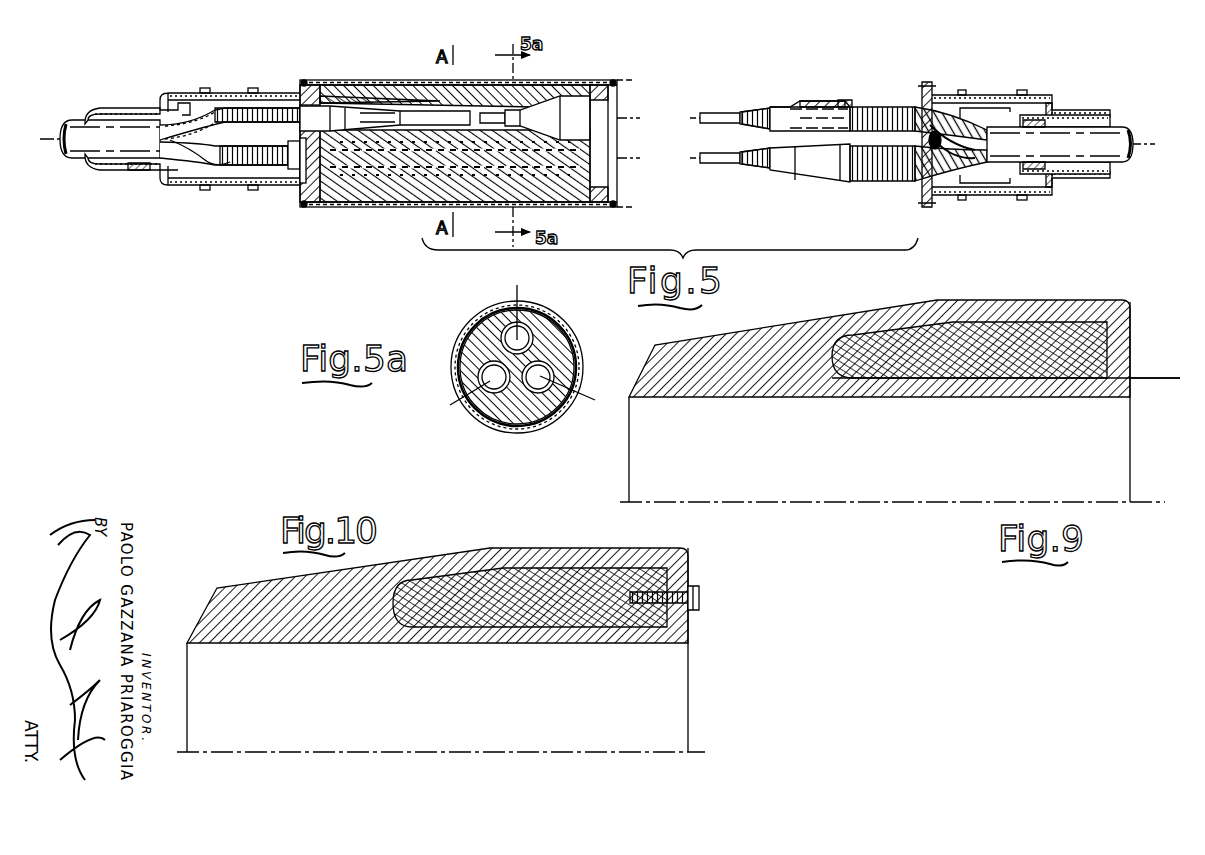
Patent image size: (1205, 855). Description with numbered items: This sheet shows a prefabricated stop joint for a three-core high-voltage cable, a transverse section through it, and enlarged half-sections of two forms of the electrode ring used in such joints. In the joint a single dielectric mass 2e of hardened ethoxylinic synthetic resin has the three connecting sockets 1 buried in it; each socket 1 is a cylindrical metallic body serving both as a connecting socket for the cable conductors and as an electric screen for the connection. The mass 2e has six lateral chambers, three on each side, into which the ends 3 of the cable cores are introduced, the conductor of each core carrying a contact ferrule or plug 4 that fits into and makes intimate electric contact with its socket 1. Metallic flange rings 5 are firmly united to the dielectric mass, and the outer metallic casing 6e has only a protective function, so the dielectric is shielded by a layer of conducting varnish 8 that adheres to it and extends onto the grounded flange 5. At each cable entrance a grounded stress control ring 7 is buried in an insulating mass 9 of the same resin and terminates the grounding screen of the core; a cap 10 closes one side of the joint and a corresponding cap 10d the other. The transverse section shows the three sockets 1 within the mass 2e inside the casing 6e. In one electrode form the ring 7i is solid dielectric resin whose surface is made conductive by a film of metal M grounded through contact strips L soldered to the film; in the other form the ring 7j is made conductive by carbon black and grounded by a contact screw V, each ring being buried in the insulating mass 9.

In FIG. 5, the connecting socket 1 is at (418, 106).
In FIG. 5A, the connecting socket 1 is at (523, 383).
In FIG. 5, the dielectric mass 2e is at (560, 85).
In FIG. 5, the cable core end 3 is at (781, 108).
In FIG. 5, the contact ferrule or plug 4 is at (704, 114).
In FIG. 5, the metallic flange ring 5 is at (300, 82).
In FIG. 5, the outer metallic casing 6e is at (347, 80).
In FIG. 5A, the outer metallic casing 6e is at (455, 348).
In FIG. 5, the stress control ring 7 is at (845, 100).
In FIG. 9, the electrode ring 7i is at (887, 390).
In FIG. 10, the electrode ring 7j is at (460, 577).
In FIG. 5, the conducting varnish layer 8 is at (385, 85).
In FIG. 5A, the conducting varnish layer 8 is at (580, 365).
In FIG. 5, the insulating mass 9 is at (824, 101).
In FIG. 9, the insulating mass 9 is at (702, 377).
In FIG. 10, the insulating mass 9 is at (238, 600).
In FIG. 5, the cap 10 is at (950, 92).
In FIG. 5, the housing 10d is at (223, 93).
In FIG. 9, the metal film M is at (988, 390).
In FIG. 9, the contact strip L is at (1157, 383).
In FIG. 10, the contact screw V is at (700, 597).